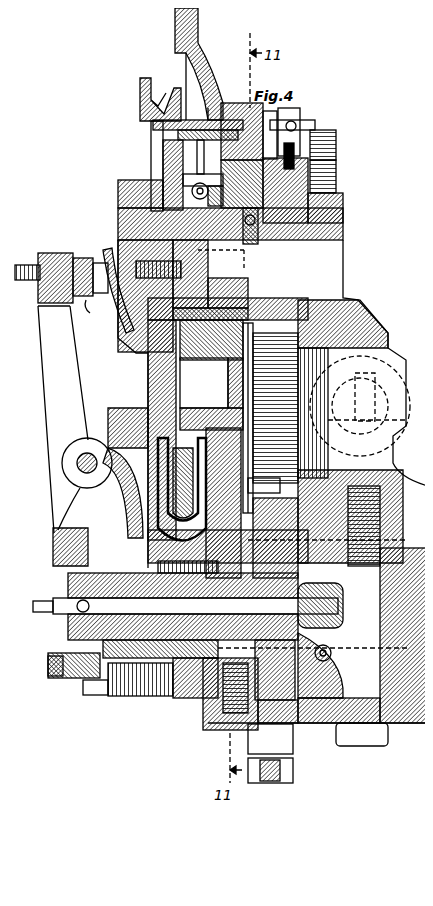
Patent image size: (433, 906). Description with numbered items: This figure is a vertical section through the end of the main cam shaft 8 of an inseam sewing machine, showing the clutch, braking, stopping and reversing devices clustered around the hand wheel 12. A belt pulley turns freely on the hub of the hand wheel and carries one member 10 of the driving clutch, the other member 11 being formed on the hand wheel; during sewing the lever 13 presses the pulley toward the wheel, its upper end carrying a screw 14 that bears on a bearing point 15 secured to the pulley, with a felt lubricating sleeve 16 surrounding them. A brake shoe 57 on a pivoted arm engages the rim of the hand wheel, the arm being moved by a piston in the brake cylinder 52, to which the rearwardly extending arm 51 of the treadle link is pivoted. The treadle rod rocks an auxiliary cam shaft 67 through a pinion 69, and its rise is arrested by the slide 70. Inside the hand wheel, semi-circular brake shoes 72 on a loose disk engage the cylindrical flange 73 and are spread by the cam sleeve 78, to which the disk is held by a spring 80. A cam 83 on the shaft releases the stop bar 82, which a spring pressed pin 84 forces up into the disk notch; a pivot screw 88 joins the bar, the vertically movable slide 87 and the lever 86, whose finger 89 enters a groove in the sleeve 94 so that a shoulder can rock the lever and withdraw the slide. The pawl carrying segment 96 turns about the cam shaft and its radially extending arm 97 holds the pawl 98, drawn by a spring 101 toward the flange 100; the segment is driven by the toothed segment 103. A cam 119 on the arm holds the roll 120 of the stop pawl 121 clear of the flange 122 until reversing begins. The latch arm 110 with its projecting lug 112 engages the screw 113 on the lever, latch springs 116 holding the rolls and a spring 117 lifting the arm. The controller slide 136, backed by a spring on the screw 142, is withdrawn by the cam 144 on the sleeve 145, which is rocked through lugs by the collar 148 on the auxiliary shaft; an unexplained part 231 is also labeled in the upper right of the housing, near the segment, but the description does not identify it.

The cam shaft 8 is at (333, 258).
The driving clutch member 10 is at (156, 142).
The clutch member 11 is at (150, 128).
The hand wheel 12 is at (183, 56).
The lever 13 is at (48, 346).
The screw 14 is at (58, 284).
The bearing point 15 is at (94, 254).
The felt lubricating sleeve 16 is at (95, 306).
The brake shoe 57 is at (131, 473).
The cam shaft 67 is at (58, 596).
The pinion 69 is at (290, 719).
The slide 70 is at (332, 542).
The semi-circular brake shoes 72 is at (155, 165).
The cylindrical flange 73 is at (183, 116).
The cam sleeve 78 is at (214, 232).
The spring 80 is at (150, 180).
The stop bar 82 is at (178, 448).
The cam 83 is at (190, 457).
The spring pressed pin 84 is at (195, 706).
The lever 86 is at (355, 406).
The vertically movable slide 87 is at (285, 408).
The pivot screw 88 is at (310, 470).
The pivoted finger 89 is at (237, 377).
The sleeve 94 is at (262, 232).
The pawl carrying segment 96 is at (300, 292).
The radially extending arm 97 is at (335, 186).
The pawl 98 is at (204, 173).
The flange 100 is at (300, 131).
The spring 101 is at (328, 168).
The segment 103 is at (367, 424).
The latch arm 110 is at (88, 700).
The projecting lug 112 is at (74, 686).
The screw 113 is at (42, 657).
The latch springs 116 is at (56, 611).
The spring 117 is at (124, 700).
The cam 119 is at (307, 120).
The roll 120 is at (269, 108).
The stop pawl 121 is at (292, 114).
The flange 122 is at (328, 150).
The controller slide 136 is at (334, 613).
The screw 142 is at (323, 647).
The cam 144 is at (92, 573).
The sleeve 145 is at (319, 667).
The collar 148 is at (335, 680).
The cover 231 is at (325, 292).
The rearwardly extending arm 51 is at (265, 776).
The brake cylinder 52 is at (286, 742).